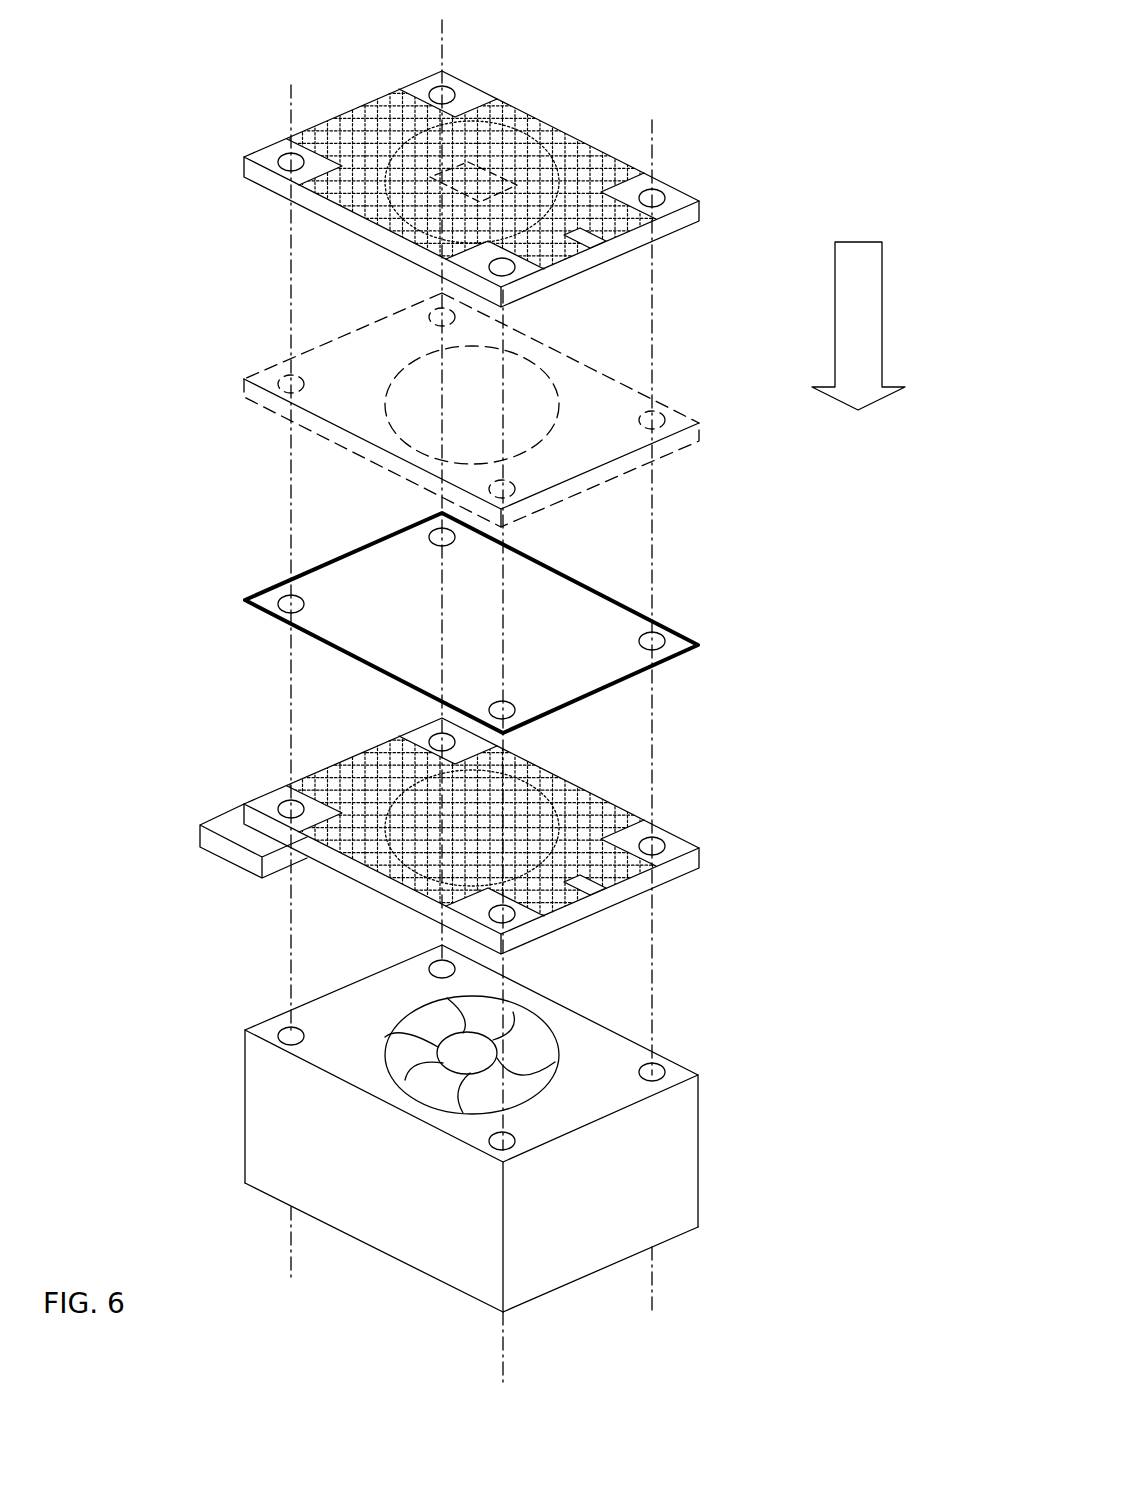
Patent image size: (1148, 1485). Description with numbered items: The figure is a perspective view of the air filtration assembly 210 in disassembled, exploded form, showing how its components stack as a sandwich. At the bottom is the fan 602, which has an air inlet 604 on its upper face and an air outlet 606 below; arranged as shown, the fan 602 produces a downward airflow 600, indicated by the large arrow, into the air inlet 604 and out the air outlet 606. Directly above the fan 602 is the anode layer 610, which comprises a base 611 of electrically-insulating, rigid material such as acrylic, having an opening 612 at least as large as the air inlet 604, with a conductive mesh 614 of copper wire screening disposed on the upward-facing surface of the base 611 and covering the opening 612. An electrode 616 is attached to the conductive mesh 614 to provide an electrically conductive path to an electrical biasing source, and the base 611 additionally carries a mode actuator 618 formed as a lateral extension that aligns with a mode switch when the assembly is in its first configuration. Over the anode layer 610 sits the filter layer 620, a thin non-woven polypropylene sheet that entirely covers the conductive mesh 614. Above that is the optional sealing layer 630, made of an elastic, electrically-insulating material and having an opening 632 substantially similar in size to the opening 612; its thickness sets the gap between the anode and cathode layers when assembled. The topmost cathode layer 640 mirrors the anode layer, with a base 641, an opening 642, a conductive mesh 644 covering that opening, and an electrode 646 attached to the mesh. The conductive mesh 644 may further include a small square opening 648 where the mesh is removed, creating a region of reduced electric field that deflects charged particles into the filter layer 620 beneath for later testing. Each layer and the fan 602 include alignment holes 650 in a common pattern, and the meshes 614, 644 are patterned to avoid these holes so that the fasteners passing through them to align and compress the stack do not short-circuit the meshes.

The airflow 600 is at (882, 308).
The air filtration assembly 210 is at (165, 643).
The fan 602 is at (520, 1128).
The air inlet 604 is at (532, 1022).
The air outlet 606 is at (452, 1287).
The anode layer 610 is at (456, 833).
The base 611 is at (373, 878).
The opening 612 is at (527, 790).
The conductive mesh 614 is at (598, 812).
The electrode 616 is at (593, 902).
The mode actuator 618 is at (198, 826).
The filter layer 620 is at (698, 645).
The sealing layer 630 is at (495, 410).
The opening 632 is at (397, 423).
The cathode layer 640 is at (500, 168).
The base 641 is at (397, 242).
The opening 642 is at (517, 135).
The conductive mesh 644 is at (573, 158).
The electrode 646 is at (590, 248).
The opening 648 is at (463, 183).
The alignment holes 650 is at (283, 156).